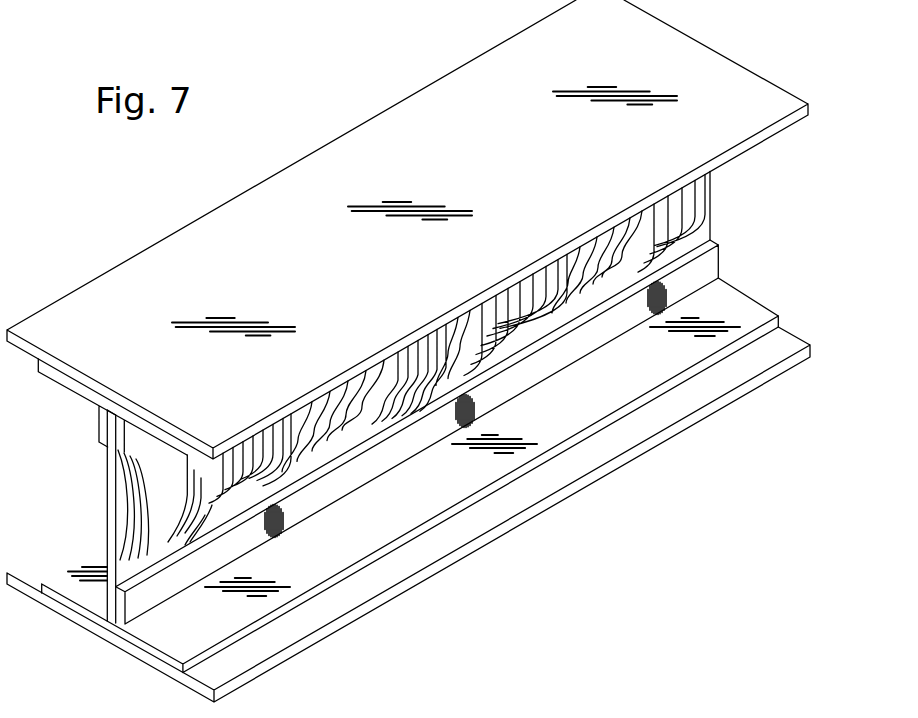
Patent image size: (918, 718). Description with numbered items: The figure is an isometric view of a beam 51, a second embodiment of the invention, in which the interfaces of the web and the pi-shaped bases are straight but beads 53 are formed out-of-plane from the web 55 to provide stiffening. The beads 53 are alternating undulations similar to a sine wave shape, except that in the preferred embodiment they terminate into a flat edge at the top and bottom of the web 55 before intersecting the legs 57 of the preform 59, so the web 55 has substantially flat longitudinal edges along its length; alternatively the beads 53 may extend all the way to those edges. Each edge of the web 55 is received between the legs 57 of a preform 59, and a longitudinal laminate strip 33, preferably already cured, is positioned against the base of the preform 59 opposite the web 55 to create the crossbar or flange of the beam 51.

The beam 51 is at (212, 187).
The laminate strip 33 is at (100, 318).
The beads 53 is at (170, 493).
The web 55 is at (126, 485).
The legs 57 is at (144, 598).
The preform 59 is at (345, 540).